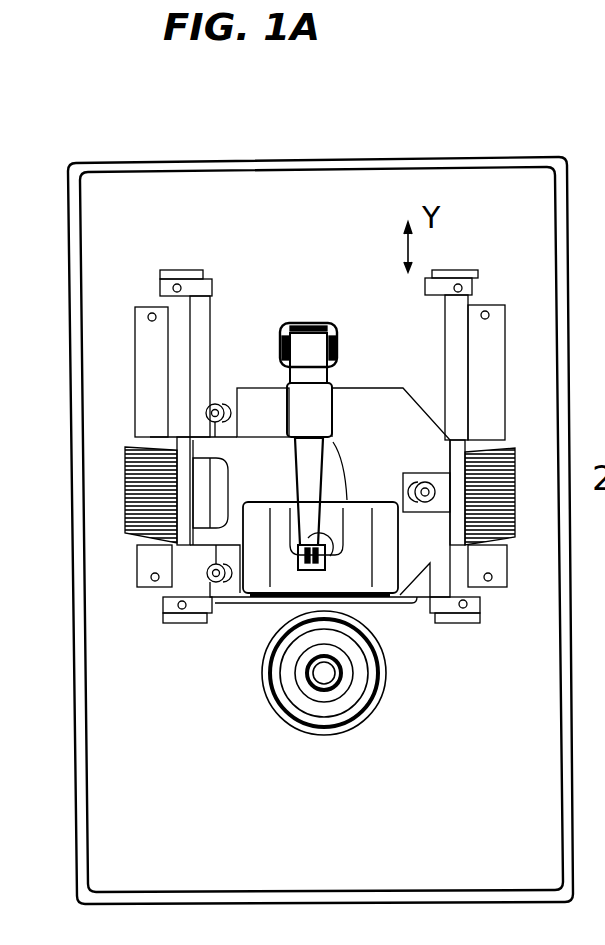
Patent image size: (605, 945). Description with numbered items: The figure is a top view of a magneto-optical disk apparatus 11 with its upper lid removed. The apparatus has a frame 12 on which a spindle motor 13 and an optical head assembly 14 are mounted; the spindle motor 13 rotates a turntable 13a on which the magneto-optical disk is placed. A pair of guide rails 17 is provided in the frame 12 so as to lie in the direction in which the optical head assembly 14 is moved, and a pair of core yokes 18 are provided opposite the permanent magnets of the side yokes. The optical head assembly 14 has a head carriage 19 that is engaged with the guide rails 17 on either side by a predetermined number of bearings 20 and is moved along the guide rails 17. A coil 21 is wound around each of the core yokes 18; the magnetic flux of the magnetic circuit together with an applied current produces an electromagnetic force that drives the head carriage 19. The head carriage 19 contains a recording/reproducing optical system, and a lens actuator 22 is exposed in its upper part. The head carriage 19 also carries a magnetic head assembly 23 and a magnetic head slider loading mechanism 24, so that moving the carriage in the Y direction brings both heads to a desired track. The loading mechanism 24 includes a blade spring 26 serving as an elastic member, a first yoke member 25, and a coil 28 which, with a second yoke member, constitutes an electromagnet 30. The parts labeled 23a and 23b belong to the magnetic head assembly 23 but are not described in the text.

The magneto-optical disk apparatus 11 is at (270, 101).
The frame 12 is at (112, 853).
The spindle motor 13 is at (358, 727).
The turntable 13a is at (290, 673).
The optical head assembly 14 is at (253, 605).
The guide rails 17 is at (195, 320).
The core yokes 18 is at (148, 342).
The head carriage 19 is at (378, 388).
The bearings 20 is at (208, 408).
The coil 21 is at (127, 480).
The lens actuator 22 is at (345, 575).
The magnetic head assembly 23 is at (347, 482).
The needle tip holder 23a is at (296, 520).
The needle recess 23b is at (297, 465).
The magnetic head slider loading mechanism 24 is at (350, 398).
The first yoke member 25 is at (298, 400).
The blade spring 26 is at (298, 353).
The coil 28 is at (284, 322).
The electromagnet 30 is at (313, 322).